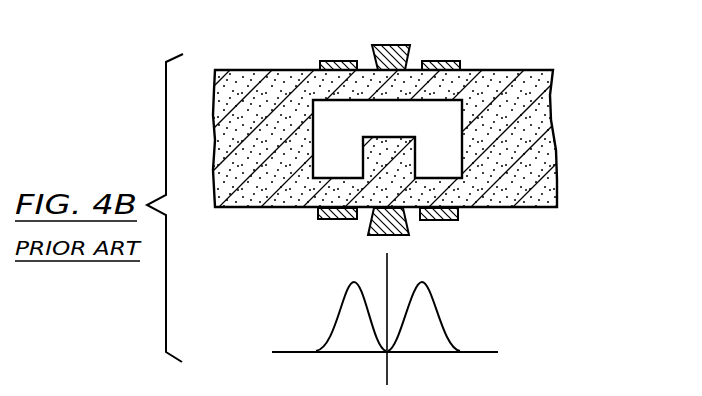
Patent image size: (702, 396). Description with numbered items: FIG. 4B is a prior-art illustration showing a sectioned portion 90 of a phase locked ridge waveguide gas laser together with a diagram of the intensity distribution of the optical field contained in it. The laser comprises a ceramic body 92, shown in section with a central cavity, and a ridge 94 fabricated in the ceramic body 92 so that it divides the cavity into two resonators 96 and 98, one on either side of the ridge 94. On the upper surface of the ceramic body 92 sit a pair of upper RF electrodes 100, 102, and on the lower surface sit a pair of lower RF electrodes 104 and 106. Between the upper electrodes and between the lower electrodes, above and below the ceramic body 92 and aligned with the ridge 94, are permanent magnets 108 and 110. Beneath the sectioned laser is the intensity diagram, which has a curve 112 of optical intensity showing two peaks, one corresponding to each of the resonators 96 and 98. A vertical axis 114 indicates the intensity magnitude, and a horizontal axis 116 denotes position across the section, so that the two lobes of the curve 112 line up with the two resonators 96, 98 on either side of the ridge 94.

The portion of a phase locked ridge waveguide gas laser 90 is at (590, 86).
The ceramic body 92 is at (557, 157).
The ridge 94 is at (392, 139).
The resonator 96 is at (352, 148).
The resonator 98 is at (450, 148).
The upper RF electrode 100 is at (328, 62).
The upper RF electrode 102 is at (450, 62).
The lower RF electrode 104 is at (320, 214).
The lower RF electrode 106 is at (455, 221).
The permanent magnet 108 is at (400, 45).
The permanent magnet 110 is at (372, 236).
The curve of optical intensity 112 is at (437, 310).
The axis 114 is at (387, 272).
The axis 116 is at (490, 352).